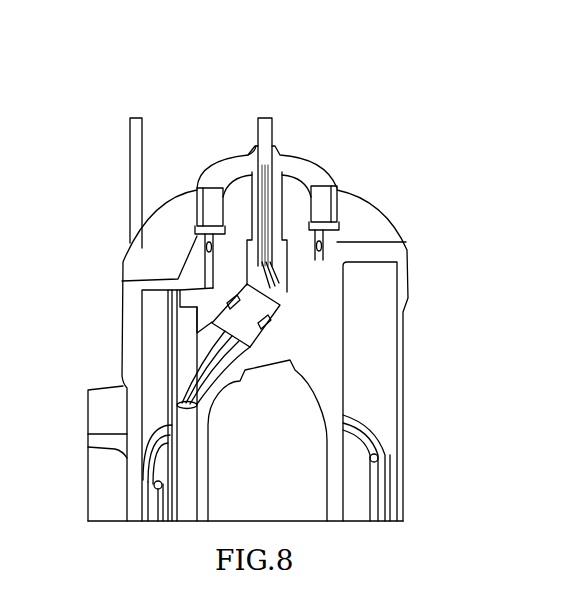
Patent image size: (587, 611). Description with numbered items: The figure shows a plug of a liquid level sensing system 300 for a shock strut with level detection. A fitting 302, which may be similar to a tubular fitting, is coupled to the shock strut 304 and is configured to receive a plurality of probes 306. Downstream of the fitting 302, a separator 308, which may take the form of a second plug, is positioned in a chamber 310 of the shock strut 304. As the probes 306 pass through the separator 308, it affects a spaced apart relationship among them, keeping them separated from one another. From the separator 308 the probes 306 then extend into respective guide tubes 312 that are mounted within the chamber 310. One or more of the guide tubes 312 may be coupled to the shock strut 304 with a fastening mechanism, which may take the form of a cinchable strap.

The liquid level sensing system 300 is at (300, 114).
The fitting 302 is at (283, 158).
The shock strut 304 is at (382, 220).
The probes 306 is at (190, 348).
The separator 308 is at (283, 309).
The chamber 310 is at (185, 367).
The guide tubes 312 is at (188, 462).